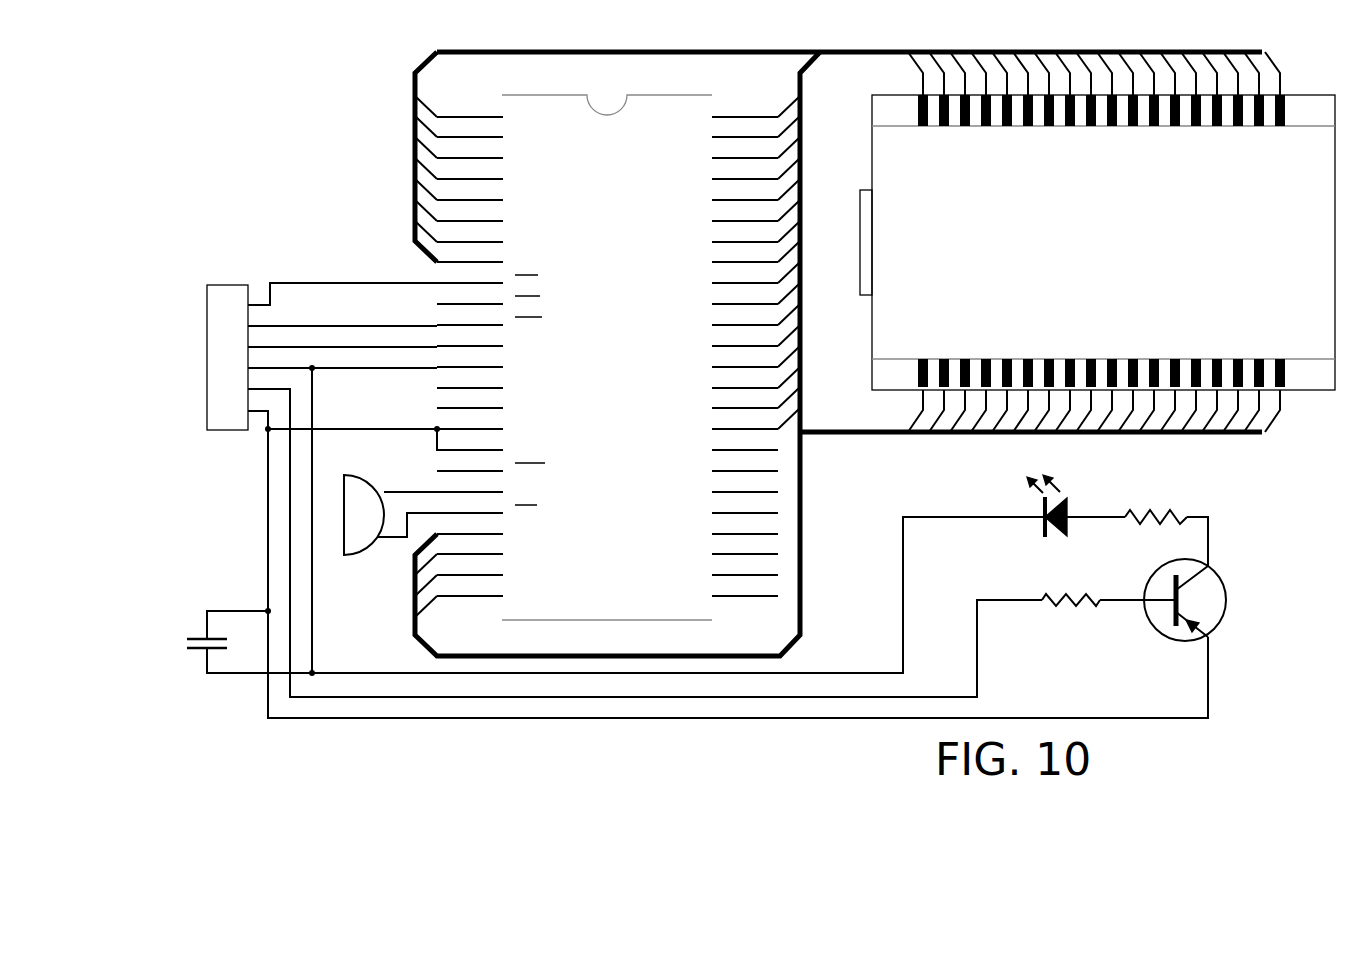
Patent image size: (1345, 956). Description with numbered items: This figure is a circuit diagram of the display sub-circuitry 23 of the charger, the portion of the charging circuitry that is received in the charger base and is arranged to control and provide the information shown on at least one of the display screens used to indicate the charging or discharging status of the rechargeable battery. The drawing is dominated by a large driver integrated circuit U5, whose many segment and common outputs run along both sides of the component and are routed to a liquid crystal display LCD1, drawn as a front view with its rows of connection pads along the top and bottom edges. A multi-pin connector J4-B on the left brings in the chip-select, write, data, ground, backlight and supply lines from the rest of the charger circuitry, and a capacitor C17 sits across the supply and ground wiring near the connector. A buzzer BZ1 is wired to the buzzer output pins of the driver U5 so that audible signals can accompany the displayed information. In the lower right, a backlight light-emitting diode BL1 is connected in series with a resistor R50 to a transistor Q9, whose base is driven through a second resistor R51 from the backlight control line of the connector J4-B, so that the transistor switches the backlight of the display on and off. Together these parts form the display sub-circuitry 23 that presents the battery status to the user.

The display sub-circuitry 23 is at (337, 145).
The HT1621B LCD driver IC U5 is at (607, 346).
The LCD front view LCD1 is at (1076, 242).
The LCD display connector J4-B is at (179, 357).
The buzzer BZ1 is at (365, 517).
The capacitor C17 is at (217, 635).
The backlight LED BL1 is at (1025, 516).
The resistor R50 is at (1156, 507).
The resistor R51 is at (1071, 591).
The transistor Q9 is at (1198, 600).